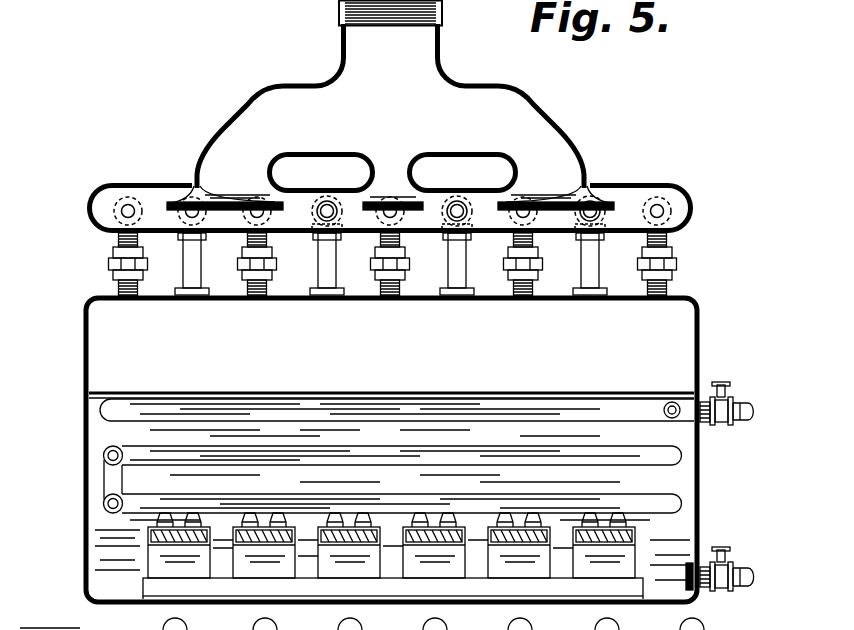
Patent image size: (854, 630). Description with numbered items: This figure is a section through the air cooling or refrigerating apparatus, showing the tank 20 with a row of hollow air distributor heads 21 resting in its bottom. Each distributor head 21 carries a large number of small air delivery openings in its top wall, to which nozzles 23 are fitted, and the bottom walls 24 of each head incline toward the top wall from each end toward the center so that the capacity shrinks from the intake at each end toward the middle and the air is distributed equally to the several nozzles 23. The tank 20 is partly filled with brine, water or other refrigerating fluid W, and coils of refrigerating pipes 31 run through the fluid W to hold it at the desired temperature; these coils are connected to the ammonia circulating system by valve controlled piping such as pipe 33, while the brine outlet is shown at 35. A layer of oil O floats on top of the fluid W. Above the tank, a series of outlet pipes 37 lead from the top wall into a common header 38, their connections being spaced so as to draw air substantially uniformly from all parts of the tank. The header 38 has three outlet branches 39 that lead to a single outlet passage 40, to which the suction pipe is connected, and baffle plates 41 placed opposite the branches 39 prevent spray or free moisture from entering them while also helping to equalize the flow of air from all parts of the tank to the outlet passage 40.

The tank 20 is at (82, 358).
The hollow air distributor head 21 is at (637, 543).
The nozzle 23 is at (190, 513).
The bottom wall 24 is at (343, 563).
The refrigerating pipe coil 31 is at (538, 507).
The valve controlled pipe 33 is at (757, 390).
The outlet 35 is at (743, 570).
The outlet pipe 37 is at (115, 283).
The header 38 is at (148, 183).
The outlet branch 39 is at (253, 160).
The outlet passage 40 is at (390, 95).
The baffle plate 41 is at (221, 200).
The oil layer o is at (229, 393).
The refrigerating fluid w is at (324, 425).